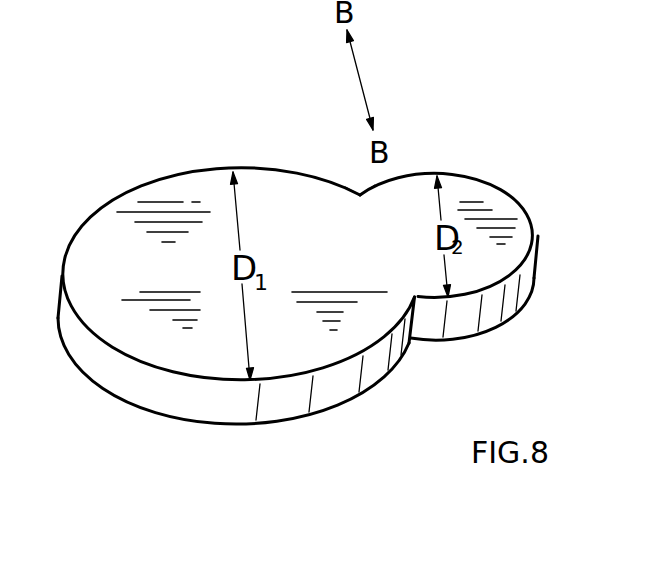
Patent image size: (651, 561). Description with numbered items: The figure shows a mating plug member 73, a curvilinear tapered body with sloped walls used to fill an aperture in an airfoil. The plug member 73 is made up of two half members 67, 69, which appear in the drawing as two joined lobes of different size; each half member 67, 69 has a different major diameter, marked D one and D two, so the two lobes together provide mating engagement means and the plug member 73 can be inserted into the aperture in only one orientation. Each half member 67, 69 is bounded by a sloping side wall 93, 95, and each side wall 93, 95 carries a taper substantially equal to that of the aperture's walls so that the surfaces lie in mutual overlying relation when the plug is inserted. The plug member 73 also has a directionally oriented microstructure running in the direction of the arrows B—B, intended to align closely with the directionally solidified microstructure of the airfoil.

The half member 67 is at (122, 245).
The half member 69 is at (505, 207).
The plug member 73 is at (300, 160).
The sloping side wall 93 is at (112, 368).
The sloping side wall 95 is at (513, 292).